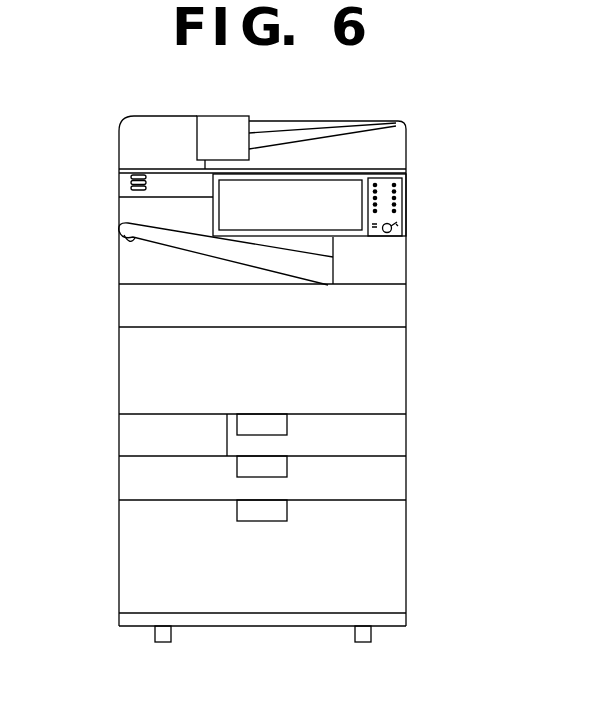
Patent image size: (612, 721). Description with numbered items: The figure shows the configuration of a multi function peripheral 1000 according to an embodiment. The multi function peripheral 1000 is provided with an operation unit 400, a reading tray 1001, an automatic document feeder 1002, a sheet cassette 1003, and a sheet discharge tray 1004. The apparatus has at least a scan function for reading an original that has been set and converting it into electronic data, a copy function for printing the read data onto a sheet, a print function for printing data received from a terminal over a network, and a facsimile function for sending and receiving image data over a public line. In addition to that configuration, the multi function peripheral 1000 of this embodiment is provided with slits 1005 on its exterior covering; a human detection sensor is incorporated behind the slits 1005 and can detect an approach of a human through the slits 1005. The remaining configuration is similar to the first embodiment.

The multi function peripheral 1000 is at (108, 53).
The reading tray 1001 is at (318, 130).
The automatic document feeder 1002 is at (170, 116).
The sheet cassette 1003 is at (392, 430).
The sheet discharge tray 1004 is at (130, 233).
The slits 1005 is at (130, 180).
The operation unit 400 is at (385, 173).